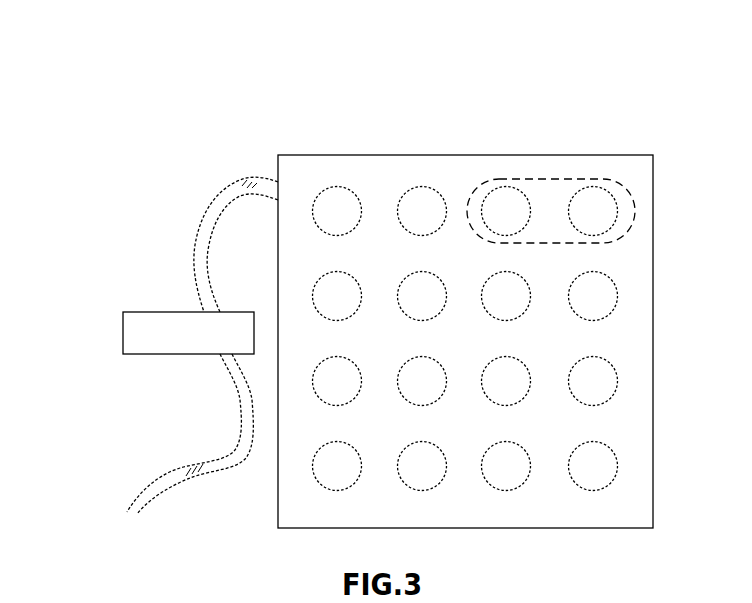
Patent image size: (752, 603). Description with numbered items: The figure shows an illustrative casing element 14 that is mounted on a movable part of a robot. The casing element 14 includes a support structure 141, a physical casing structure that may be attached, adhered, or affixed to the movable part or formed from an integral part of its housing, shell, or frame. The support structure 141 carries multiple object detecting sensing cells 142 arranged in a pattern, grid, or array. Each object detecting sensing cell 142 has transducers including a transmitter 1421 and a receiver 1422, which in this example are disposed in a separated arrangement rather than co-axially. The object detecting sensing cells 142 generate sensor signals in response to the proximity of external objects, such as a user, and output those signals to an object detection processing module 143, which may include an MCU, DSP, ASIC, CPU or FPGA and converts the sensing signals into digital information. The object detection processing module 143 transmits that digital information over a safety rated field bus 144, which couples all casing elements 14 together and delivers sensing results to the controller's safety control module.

The casing element 14 is at (165, 150).
The support structure 141 is at (375, 150).
The object detecting sensing cell 142 is at (477, 185).
The transmitter 1421 is at (590, 205).
The receiver 1422 is at (503, 203).
The object detection processing module 143 is at (168, 312).
The safety rated field bus 144 is at (168, 450).